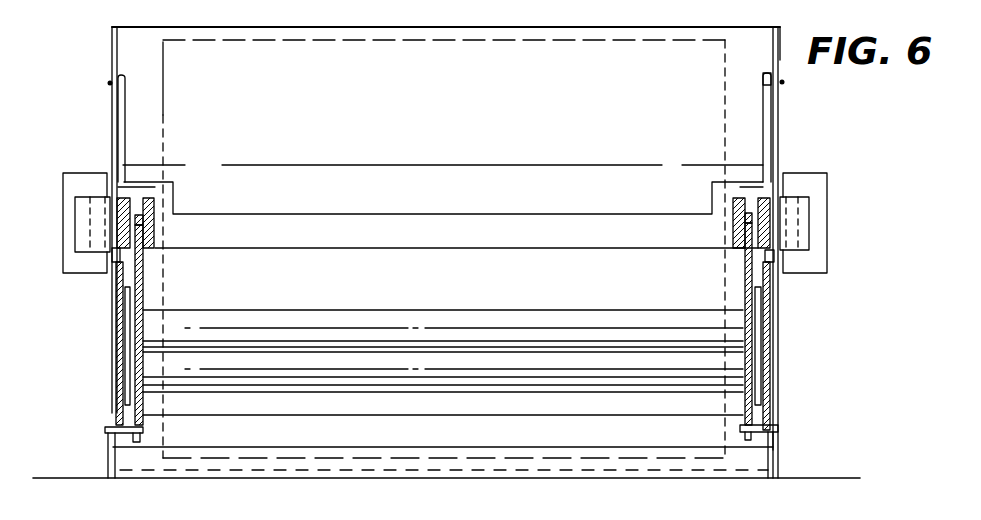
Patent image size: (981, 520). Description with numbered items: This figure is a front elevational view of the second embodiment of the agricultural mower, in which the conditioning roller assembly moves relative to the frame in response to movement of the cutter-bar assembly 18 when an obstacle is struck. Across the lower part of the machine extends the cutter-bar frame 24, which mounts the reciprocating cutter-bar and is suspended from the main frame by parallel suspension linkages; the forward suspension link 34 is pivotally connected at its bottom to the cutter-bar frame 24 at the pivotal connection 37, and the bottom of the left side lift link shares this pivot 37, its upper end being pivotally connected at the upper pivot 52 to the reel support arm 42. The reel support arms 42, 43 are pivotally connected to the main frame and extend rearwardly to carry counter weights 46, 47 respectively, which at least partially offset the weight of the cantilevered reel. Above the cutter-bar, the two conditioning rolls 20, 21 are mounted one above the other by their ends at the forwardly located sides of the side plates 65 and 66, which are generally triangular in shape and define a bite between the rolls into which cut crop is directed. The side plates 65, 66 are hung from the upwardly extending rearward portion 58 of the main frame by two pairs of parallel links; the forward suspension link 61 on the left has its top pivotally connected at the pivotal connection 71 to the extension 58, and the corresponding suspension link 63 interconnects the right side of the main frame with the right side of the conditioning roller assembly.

The cutter-bar assembly 18 is at (160, 485).
The conditioning roll 20 is at (349, 308).
The conditioning roll 21 is at (468, 352).
The cutter-bar frame 24 is at (782, 456).
The forward suspension link 34 is at (775, 346).
The pivotal connection 37 is at (780, 430).
The reel support arm 42 is at (740, 180).
The reel support arm 43 is at (147, 197).
The counter weight 46 is at (800, 173).
The counter weight 47 is at (80, 146).
The upper pivot 52 is at (733, 222).
The rearward portion of main frame 58 is at (780, 53).
The forward suspension link 61 is at (763, 118).
The suspension link 63 is at (127, 108).
The side plate 65 is at (767, 325).
The side plate 66 is at (143, 293).
The pivotal connection 71 is at (763, 80).